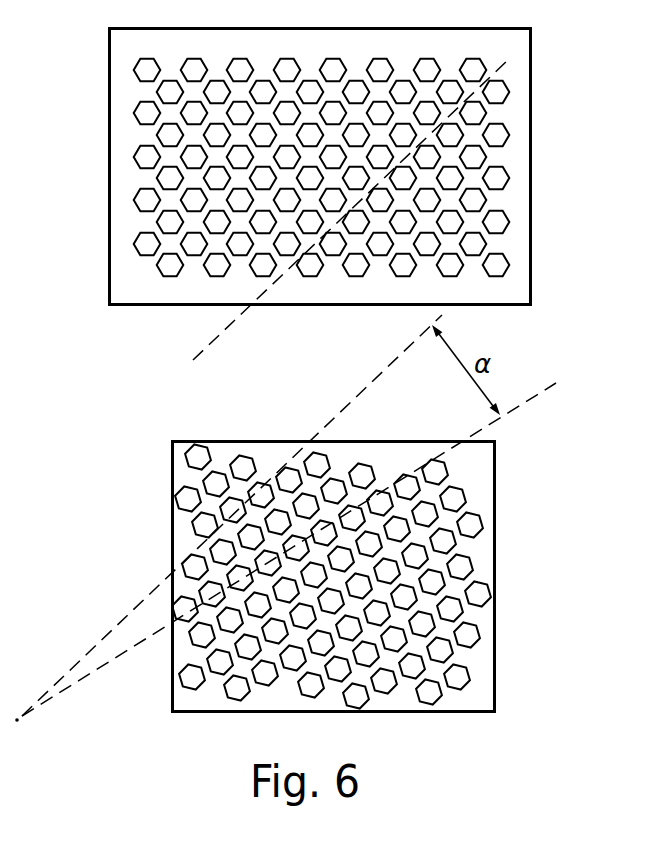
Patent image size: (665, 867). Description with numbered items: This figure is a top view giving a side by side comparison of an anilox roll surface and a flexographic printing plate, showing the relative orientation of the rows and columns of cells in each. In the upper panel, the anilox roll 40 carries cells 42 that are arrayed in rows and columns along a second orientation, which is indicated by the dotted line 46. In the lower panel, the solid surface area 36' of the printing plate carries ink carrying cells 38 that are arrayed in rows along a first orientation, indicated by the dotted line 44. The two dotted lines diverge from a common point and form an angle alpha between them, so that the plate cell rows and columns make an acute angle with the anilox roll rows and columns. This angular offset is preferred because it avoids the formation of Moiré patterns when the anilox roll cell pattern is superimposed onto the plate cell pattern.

The anilox roll 40 is at (325, 167).
The cells 42 is at (500, 131).
The dotted line 46 is at (243, 313).
The dotted line 44 is at (528, 400).
The solid surface area 36' is at (391, 577).
The ink carrying cells 38 is at (483, 521).